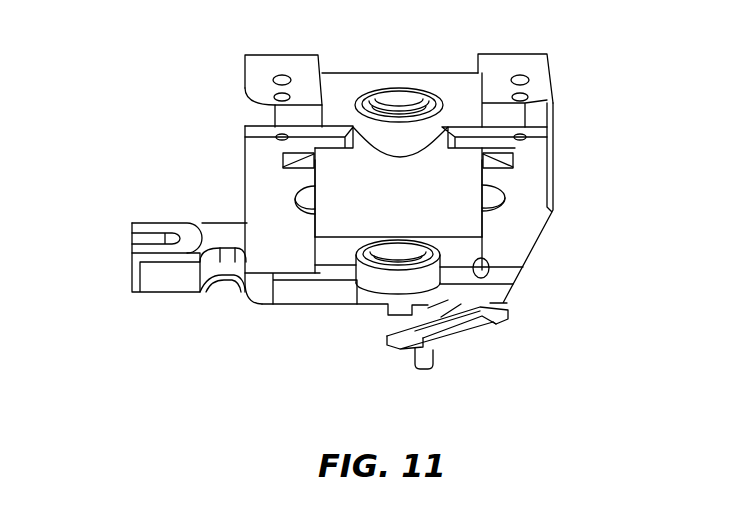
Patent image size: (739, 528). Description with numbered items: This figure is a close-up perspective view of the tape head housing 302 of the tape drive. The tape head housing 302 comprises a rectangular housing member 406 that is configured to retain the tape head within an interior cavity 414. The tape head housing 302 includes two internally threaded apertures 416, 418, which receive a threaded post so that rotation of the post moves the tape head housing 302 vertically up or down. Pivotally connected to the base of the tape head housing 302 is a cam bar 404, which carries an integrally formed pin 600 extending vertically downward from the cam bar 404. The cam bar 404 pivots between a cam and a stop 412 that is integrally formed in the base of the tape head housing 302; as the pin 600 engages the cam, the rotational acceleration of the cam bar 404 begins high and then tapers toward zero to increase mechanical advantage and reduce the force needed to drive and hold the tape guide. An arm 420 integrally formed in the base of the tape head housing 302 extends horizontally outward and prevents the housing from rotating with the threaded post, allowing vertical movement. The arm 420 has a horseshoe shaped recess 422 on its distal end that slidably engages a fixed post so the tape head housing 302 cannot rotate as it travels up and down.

The tape head housing 302 is at (214, 61).
The aperture 416 is at (413, 88).
The rectangular housing member 406 is at (557, 130).
The interior cavity 414 is at (467, 218).
The aperture 418 is at (350, 262).
The stop 412 is at (383, 310).
The cam bar 404 is at (453, 328).
The pin 600 is at (433, 356).
The arm 420 is at (215, 212).
The horseshoe shaped recess 422 is at (131, 238).